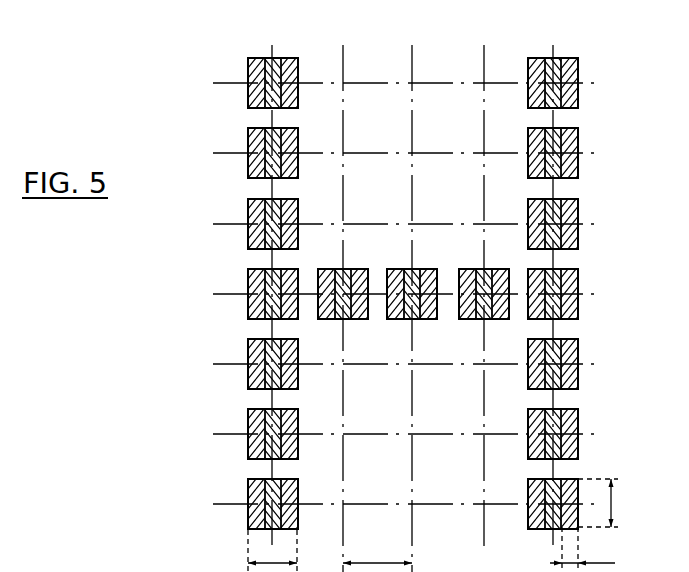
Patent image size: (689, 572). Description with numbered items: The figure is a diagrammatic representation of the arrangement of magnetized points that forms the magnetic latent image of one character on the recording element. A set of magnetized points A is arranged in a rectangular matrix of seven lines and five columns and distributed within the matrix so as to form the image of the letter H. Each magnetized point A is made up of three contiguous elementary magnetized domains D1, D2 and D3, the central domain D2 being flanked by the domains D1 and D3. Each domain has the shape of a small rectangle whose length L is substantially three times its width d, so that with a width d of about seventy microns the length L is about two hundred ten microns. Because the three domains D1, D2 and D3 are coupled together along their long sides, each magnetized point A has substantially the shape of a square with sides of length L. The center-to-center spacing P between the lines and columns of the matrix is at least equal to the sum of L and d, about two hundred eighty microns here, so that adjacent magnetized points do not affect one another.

The magnetized point A is at (249, 96).
The elementary magnetized domain D1 is at (536, 58).
The elementary magnetized domain D2 is at (554, 58).
The elementary magnetized domain D3 is at (572, 58).
The length L is at (436, 525).
The center-to-center spacing P is at (377, 551).
The width d is at (580, 563).